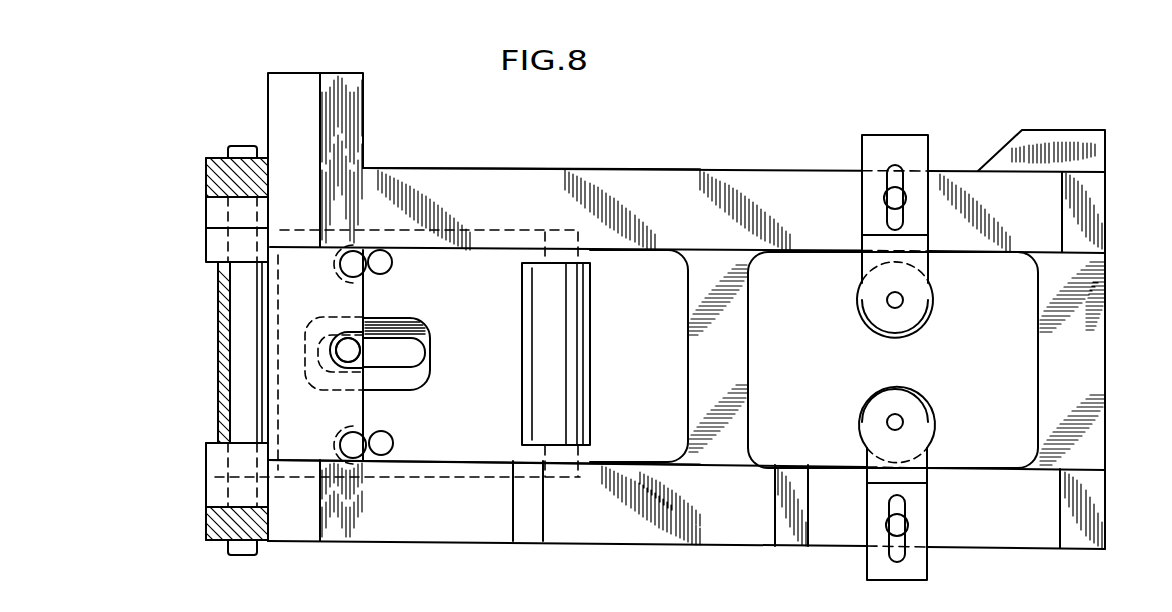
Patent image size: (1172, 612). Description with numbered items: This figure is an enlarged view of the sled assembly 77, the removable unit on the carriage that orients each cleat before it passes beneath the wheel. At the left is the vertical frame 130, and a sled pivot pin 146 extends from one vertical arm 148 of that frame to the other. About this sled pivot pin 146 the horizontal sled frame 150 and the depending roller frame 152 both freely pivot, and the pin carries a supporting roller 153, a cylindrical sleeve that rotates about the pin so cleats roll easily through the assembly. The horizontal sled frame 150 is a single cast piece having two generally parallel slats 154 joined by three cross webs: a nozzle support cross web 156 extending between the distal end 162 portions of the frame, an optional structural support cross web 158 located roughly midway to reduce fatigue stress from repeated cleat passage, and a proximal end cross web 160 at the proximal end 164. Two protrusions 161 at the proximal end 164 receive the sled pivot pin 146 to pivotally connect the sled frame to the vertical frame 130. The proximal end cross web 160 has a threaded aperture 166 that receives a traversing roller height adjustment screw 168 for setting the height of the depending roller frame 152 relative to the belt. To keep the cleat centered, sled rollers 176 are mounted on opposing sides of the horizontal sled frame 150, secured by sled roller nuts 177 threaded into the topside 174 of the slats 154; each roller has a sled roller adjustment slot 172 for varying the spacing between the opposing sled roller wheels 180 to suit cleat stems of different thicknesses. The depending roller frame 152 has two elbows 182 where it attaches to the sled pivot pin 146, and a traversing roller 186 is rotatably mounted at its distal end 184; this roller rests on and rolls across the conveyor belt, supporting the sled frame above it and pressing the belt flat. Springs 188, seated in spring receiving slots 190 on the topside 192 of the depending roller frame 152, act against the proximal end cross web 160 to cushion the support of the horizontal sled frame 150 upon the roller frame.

The sled assembly 77 is at (864, 118).
The vertical frame 130 is at (208, 168).
The vertical arm 148 is at (178, 351).
The sled pivot pin 146 is at (234, 298).
The horizontal sled frame 150 is at (565, 166).
The depending roller frame 152 is at (592, 453).
The supporting roller 153 is at (222, 370).
The slat 154 is at (703, 195).
The nozzle support cross web 156 is at (1090, 292).
The structural support cross web 158 is at (748, 338).
The proximal end cross web 160 is at (364, 290).
The protrusion 161 is at (206, 210).
The distal end 162 is at (1105, 500).
The proximal end 164 is at (268, 482).
The threaded aperture 166 is at (348, 365).
The traversing roller height adjustment screw 168 is at (322, 378).
The sled roller adjustment slot 172 is at (897, 165).
The topside 174 is at (1034, 222).
The sled roller 176 is at (910, 302).
The sled roller nut 177 is at (884, 200).
The sled roller wheel 180 is at (888, 356).
The elbow 182 is at (206, 245).
The distal end 184 is at (578, 262).
The traversing roller 186 is at (577, 318).
The spring 188 is at (366, 262).
The spring receiving slot 190 is at (383, 250).
The topside 192 is at (494, 345).